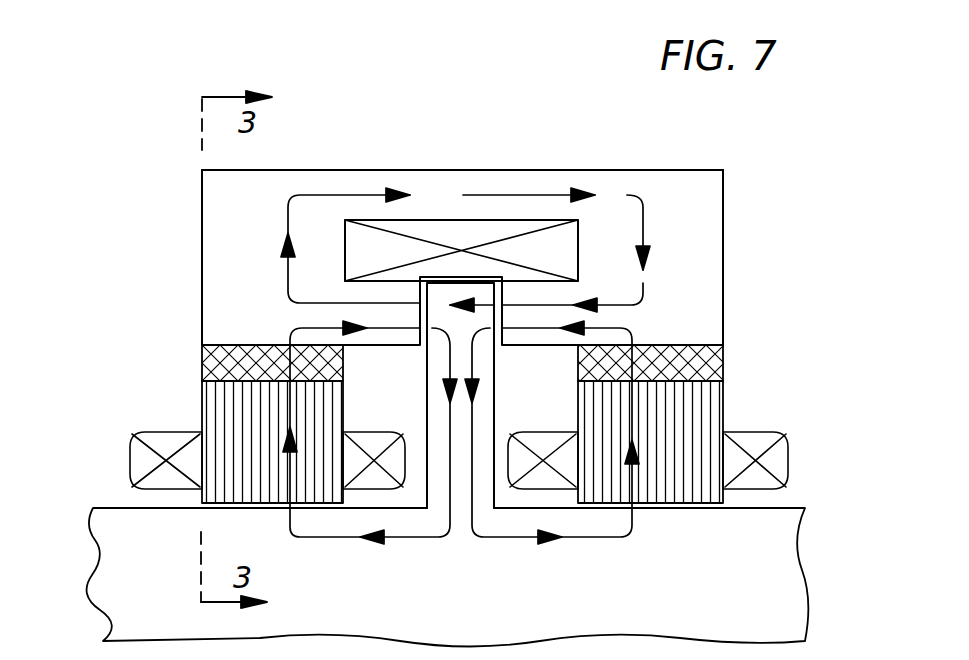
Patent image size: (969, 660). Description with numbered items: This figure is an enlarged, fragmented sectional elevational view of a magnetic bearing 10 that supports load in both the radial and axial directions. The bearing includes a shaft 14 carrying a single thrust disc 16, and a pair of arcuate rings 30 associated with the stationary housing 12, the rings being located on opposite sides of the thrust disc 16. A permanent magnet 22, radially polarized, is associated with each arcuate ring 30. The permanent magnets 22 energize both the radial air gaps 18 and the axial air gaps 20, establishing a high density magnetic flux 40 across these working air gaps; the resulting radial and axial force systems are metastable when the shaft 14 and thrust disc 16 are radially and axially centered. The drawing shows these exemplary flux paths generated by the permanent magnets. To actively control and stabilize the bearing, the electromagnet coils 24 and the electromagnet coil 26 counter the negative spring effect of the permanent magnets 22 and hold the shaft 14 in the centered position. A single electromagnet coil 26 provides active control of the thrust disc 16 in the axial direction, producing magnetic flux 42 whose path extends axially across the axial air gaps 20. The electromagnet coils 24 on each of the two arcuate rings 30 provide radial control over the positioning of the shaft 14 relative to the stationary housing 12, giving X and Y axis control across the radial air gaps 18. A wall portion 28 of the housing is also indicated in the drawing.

The magnetic bearing 10 is at (738, 183).
The stationary housing 12 is at (188, 213).
The shaft 14 is at (788, 512).
The thrust disc 16 is at (496, 413).
The radial air gap 18 is at (275, 506).
The axial air gap 20 is at (420, 302).
The permanent magnet 22 is at (202, 355).
The electromagnet coil 24 is at (372, 432).
The electromagnet coil 26 is at (435, 220).
The housing side wall 28 is at (723, 232).
The arcuate ring 30 is at (202, 405).
The magnetic flux 40 is at (405, 538).
The magnetic flux 42 is at (643, 217).